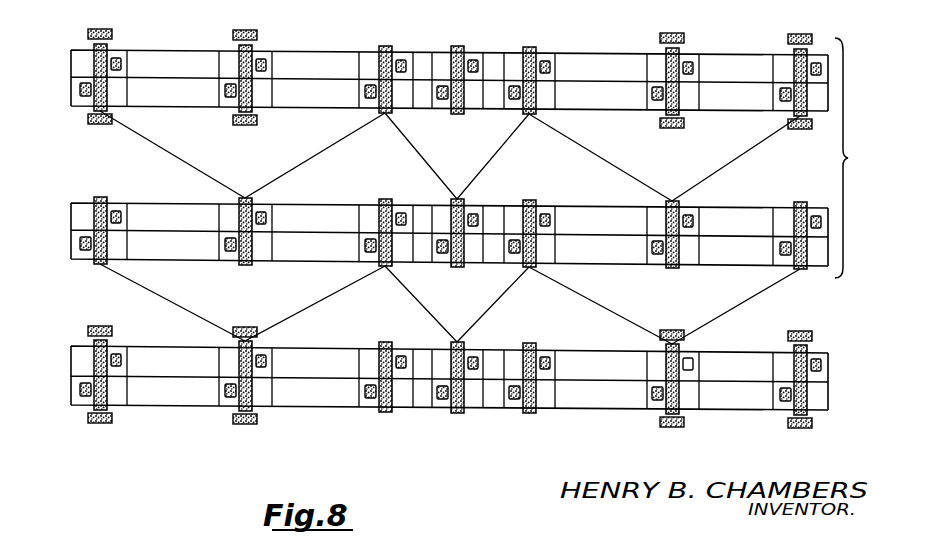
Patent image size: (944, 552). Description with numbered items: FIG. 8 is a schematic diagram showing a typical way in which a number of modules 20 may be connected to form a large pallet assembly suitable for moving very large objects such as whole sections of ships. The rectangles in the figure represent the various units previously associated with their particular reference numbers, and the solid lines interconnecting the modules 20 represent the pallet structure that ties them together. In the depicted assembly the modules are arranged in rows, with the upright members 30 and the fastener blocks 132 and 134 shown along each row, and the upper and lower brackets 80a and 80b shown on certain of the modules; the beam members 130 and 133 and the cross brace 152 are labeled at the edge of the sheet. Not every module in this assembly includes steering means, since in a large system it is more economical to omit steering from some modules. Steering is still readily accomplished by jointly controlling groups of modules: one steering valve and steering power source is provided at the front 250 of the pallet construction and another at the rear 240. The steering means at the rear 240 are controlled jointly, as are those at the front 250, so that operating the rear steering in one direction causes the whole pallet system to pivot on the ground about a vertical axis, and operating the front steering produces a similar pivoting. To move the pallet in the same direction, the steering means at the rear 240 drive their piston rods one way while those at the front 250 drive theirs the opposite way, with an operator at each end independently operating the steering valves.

The module 20 is at (740, 192).
The upright post 30 is at (794, 362).
The upper connector bracket 80a is at (814, 324).
The lower connector bracket 80b is at (793, 442).
The beam member 130 is at (241, 5).
The upper fastener block 132 is at (853, 360).
The beam member 133 is at (341, 5).
The lower fastener block 134 is at (652, 398).
The cross brace 152 is at (299, 6).
The rear of the pallet construction 240 is at (560, 38).
The front of the pallet construction 250 is at (515, 440).